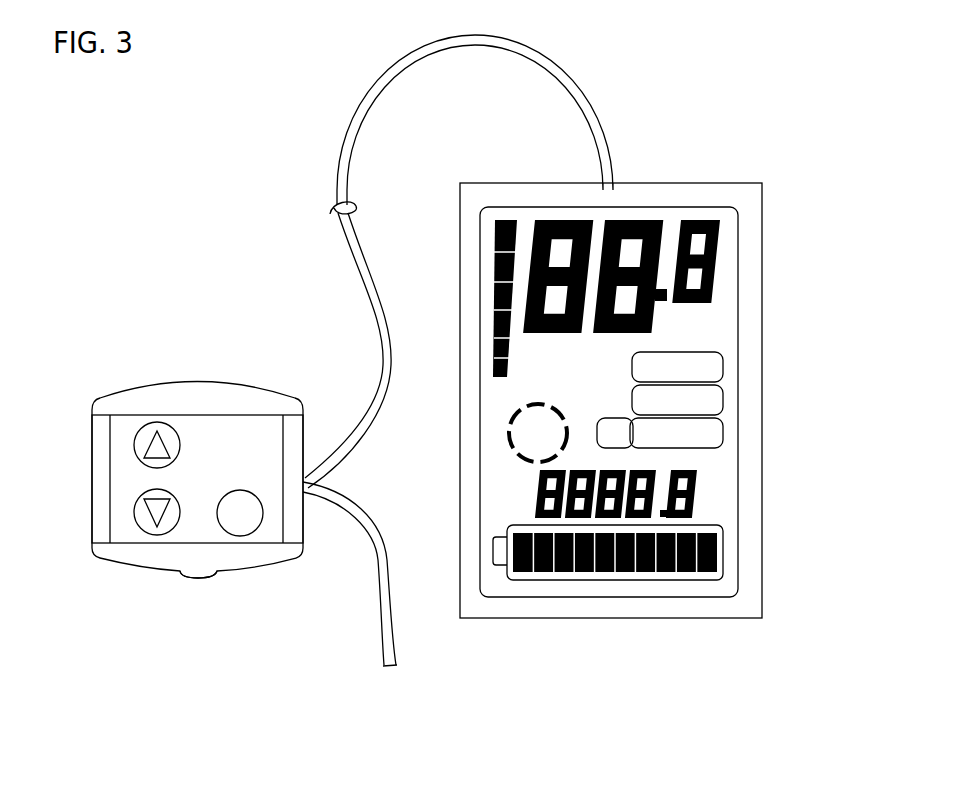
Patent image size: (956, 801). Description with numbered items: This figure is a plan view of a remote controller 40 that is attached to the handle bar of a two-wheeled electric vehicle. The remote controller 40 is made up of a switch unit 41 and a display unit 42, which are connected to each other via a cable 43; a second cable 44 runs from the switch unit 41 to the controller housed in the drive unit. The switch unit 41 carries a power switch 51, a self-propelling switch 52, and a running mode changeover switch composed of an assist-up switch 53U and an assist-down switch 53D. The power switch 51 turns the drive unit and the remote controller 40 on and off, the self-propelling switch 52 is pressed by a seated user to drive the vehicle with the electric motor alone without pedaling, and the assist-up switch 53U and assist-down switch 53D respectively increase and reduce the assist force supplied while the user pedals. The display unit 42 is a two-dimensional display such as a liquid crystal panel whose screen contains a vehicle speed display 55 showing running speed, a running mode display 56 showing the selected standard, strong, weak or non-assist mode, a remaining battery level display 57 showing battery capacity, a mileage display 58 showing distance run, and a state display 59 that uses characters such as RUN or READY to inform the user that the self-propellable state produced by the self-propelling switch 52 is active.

The remote controller 40 is at (611, 404).
The switch unit 41 is at (240, 383).
The display unit 42 is at (703, 183).
The cable 43 is at (588, 86).
The cable 44 is at (390, 635).
The power switch 51 is at (243, 515).
The self-propelling switch 52 is at (198, 580).
The assist-up switch 53U is at (152, 430).
The assist-down switch 53D is at (152, 517).
The vehicle speed display 55 is at (725, 272).
The running mode display 56 is at (723, 345).
The remaining battery level display 57 is at (730, 552).
The mileage display 58 is at (720, 488).
The state display 59 is at (508, 430).